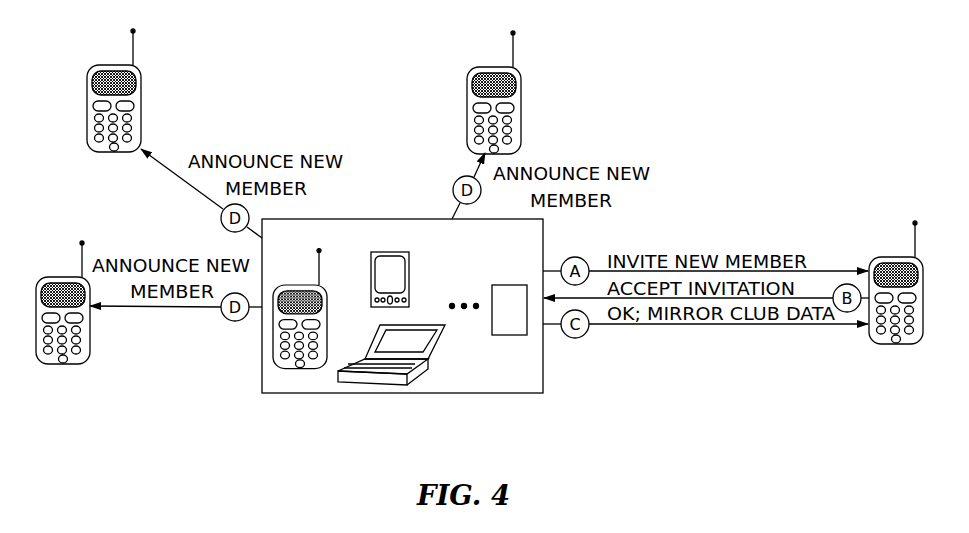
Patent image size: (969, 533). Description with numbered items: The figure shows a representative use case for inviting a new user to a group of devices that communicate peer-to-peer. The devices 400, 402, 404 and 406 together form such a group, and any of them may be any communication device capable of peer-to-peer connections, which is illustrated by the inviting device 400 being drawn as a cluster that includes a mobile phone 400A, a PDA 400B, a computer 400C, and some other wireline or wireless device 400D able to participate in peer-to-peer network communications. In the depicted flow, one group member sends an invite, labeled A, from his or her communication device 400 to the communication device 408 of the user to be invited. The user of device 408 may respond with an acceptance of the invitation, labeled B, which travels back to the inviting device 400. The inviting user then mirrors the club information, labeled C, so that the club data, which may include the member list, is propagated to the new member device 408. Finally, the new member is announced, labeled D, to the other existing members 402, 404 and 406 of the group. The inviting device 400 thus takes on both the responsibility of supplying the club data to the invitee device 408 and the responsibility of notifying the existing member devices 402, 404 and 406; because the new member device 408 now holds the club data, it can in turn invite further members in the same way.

The communication device 400 is at (518, 393).
The mobile phone 400A is at (305, 284).
The PDA 400B is at (409, 278).
The computer 400C is at (437, 345).
The other wireline or wireless device 400D is at (517, 285).
The device 402 is at (48, 277).
The device 404 is at (108, 65).
The device 406 is at (486, 67).
The communication device 408 is at (886, 257).